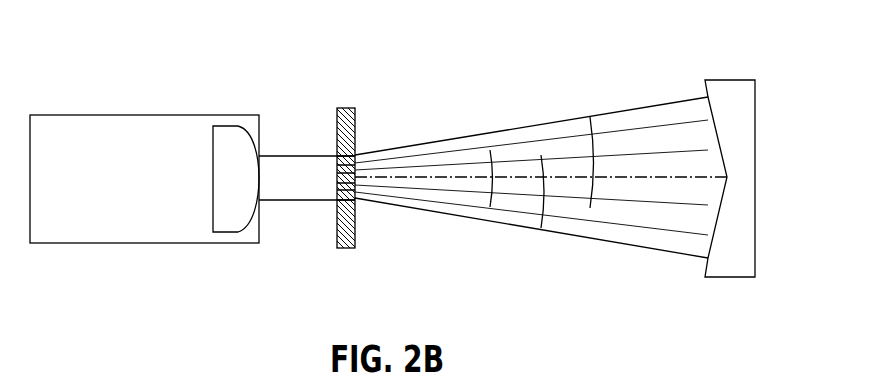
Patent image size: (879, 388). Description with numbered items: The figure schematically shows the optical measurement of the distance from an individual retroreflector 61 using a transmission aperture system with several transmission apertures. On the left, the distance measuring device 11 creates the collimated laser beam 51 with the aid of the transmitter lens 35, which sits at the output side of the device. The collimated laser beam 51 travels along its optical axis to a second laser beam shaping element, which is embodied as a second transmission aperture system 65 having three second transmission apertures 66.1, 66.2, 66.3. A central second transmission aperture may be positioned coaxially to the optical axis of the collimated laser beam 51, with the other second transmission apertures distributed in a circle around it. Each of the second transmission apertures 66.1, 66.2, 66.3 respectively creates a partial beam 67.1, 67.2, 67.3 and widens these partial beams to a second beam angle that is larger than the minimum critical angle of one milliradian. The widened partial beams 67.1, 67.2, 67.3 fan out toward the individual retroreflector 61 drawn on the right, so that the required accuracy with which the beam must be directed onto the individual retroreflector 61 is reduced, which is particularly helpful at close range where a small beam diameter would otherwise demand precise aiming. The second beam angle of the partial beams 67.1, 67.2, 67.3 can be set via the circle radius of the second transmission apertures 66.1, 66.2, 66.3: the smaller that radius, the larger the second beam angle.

The distance measuring device 11 is at (109, 110).
The transmitter lens 35 is at (228, 137).
The collimated laser beam 51 is at (294, 155).
The second transmission aperture system 65 is at (347, 108).
The second transmission aperture 66.1 is at (357, 158).
The second transmission aperture 66.2 is at (342, 180).
The second transmission aperture 66.3 is at (357, 193).
The partial beam 67.1 is at (558, 122).
The partial beam 67.2 is at (640, 118).
The partial beam 67.3 is at (594, 237).
The individual retroreflector 61 is at (731, 97).